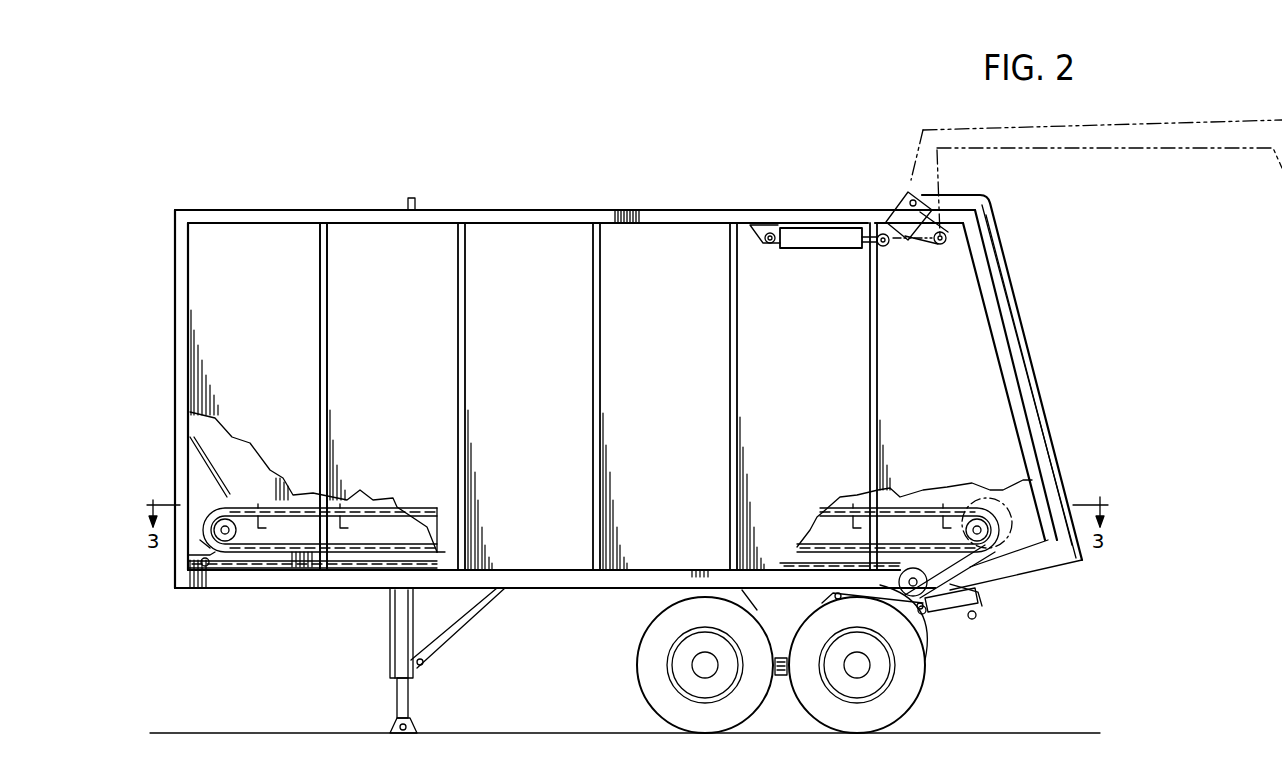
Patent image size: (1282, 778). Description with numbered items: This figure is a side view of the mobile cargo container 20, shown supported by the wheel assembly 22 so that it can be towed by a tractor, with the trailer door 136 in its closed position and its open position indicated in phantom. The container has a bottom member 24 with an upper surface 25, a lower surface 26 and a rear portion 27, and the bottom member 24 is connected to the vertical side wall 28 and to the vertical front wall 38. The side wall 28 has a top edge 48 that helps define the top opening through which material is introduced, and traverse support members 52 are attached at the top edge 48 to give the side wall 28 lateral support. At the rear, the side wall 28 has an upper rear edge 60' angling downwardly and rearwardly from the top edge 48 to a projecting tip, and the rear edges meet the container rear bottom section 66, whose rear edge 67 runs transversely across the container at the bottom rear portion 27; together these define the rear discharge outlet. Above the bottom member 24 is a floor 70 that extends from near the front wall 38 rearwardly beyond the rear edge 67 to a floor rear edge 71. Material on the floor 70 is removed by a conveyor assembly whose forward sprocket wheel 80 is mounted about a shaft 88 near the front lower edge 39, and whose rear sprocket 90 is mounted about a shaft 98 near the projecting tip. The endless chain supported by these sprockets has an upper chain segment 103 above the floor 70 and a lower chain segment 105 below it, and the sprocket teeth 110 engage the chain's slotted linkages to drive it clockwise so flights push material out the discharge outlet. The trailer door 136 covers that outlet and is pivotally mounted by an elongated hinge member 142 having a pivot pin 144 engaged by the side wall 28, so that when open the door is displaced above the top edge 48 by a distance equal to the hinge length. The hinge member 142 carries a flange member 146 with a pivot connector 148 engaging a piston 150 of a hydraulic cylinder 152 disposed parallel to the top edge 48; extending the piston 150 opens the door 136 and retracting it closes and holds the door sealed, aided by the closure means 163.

The cargo container 20 is at (572, 207).
The wheel assembly 22 is at (630, 705).
The bottom member 24 is at (525, 585).
The upper surface 25 is at (382, 568).
The lower surface 26 is at (577, 590).
The rear portion 27 is at (920, 640).
The side wall 28 is at (495, 228).
The front wall 38 is at (205, 570).
The front lower edge 39 is at (200, 548).
The side wall top edge 48 is at (640, 210).
The traverse support member 52 is at (408, 204).
The upper rear edge 60' is at (1032, 380).
The rear bottom section 66 is at (967, 615).
The rear edge 67 is at (983, 585).
The floor 70 is at (330, 545).
The floor rear edge 71 is at (1023, 565).
The forward sprocket wheel 80 is at (230, 520).
The shaft 88 is at (240, 516).
The rear sprocket 90 is at (960, 505).
The shaft 98 is at (975, 500).
The upper chain segment 103 is at (373, 497).
The lower chain segment 105 is at (340, 560).
The teeth 110 is at (250, 545).
The trailer door 136 is at (1145, 118).
The elongated hinge member 142 is at (905, 150).
The pivot pin 144 is at (905, 188).
The flange member 146 is at (900, 206).
The pivot connector 148 is at (890, 246).
The piston 150 is at (883, 225).
The hydraulic cylinder 152 is at (810, 230).
The closure means 163 is at (985, 625).